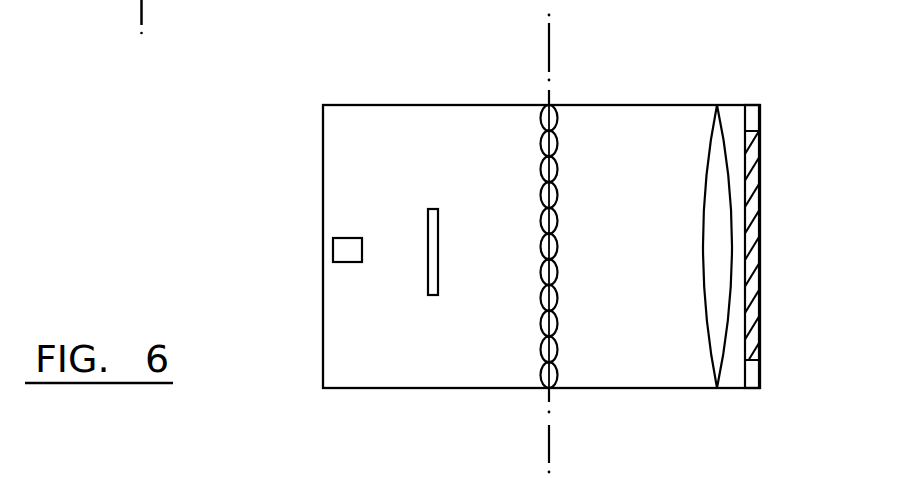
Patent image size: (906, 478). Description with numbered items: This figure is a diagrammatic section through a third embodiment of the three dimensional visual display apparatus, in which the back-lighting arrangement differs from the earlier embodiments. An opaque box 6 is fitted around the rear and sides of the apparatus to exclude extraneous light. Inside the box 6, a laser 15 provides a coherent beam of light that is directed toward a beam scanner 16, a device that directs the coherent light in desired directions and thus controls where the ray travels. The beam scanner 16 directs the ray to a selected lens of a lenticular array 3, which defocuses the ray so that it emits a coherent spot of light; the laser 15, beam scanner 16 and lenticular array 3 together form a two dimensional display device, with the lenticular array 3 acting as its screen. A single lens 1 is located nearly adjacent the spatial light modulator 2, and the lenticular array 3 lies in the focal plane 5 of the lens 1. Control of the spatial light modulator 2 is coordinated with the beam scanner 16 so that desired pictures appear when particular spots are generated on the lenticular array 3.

The lens 1 is at (722, 282).
The spatial light modulator 2 is at (757, 190).
The lenticular array 3 is at (553, 322).
The focal plane 5 is at (552, 45).
The opaque box 6 is at (323, 232).
The laser 15 is at (342, 250).
The beam scanner 16 is at (428, 237).